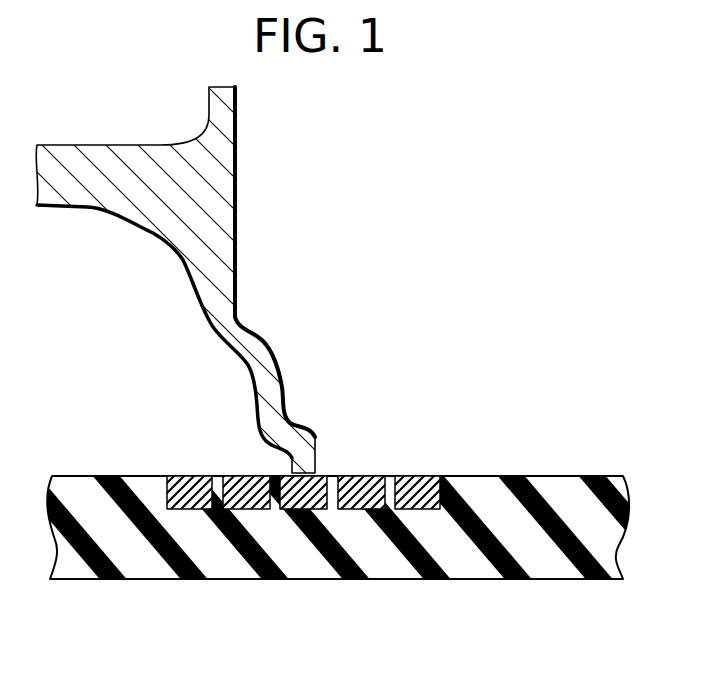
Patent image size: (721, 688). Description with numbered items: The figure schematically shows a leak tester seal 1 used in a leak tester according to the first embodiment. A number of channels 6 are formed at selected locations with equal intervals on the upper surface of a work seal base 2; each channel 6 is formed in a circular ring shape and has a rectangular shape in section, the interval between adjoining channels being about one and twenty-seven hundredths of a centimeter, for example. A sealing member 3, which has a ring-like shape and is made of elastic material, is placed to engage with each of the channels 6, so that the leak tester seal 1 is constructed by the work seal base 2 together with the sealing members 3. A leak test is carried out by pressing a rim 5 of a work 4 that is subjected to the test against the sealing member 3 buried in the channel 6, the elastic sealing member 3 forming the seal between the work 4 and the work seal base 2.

The leak tester seal 1 is at (403, 353).
The work seal base 2 is at (613, 542).
The sealing member 3 is at (420, 475).
The work 4 is at (223, 188).
The rim 5 is at (245, 362).
The channel 6 is at (443, 477).